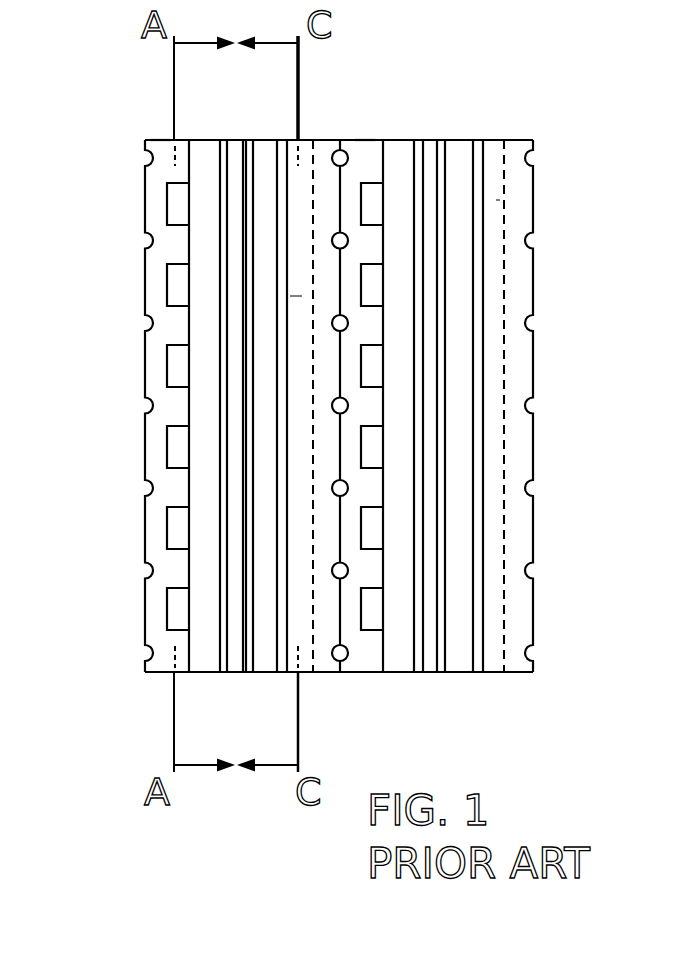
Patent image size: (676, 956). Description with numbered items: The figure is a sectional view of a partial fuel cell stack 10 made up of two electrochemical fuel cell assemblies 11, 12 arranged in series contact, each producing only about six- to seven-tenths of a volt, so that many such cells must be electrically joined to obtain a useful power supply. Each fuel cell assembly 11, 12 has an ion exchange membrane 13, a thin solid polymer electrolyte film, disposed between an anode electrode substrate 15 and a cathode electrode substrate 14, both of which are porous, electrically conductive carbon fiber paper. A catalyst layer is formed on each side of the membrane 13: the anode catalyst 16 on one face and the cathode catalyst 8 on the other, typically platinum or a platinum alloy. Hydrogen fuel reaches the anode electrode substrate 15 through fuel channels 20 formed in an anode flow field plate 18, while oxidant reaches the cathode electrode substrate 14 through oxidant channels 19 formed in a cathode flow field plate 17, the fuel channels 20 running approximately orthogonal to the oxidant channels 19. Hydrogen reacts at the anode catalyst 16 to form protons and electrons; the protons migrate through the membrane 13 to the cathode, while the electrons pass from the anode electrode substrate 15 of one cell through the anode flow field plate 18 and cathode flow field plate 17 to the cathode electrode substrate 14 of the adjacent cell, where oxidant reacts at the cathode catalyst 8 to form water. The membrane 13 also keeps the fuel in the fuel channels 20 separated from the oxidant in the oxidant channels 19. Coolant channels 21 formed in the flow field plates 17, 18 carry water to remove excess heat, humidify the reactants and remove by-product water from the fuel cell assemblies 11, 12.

The fuel cell stack 10 is at (564, 584).
The electrochemical fuel cell assembly 11 is at (236, 678).
The electrochemical fuel cell assembly 12 is at (438, 700).
The cathode catalyst 8 is at (245, 140).
The ion exchange membrane 13 is at (237, 140).
The cathode electrode substrate 14 is at (264, 140).
The anode electrode substrate 15 is at (205, 157).
The anode catalyst 16 is at (223, 140).
The cathode flow field plate 17 is at (320, 155).
The anode flow field plate 18 is at (162, 140).
The oxidant channels 19 is at (300, 296).
The fuel channels 20 is at (182, 207).
The coolant channels 21 is at (528, 242).